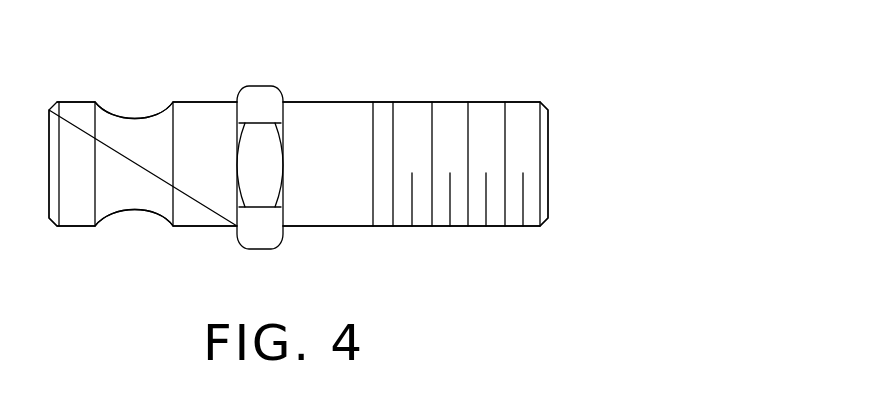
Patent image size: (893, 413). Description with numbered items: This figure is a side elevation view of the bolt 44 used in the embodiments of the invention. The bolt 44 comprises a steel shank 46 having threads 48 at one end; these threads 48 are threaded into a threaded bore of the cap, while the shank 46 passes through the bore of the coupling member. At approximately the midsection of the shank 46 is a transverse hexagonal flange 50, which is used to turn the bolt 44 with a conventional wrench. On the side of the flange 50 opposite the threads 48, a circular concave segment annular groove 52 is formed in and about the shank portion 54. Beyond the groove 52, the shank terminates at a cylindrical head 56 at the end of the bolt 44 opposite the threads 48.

The bolt 44 is at (331, 59).
The steel shank 46 is at (325, 228).
The threads 48 is at (458, 228).
The transverse hexagonal flange 50 is at (253, 84).
The circular concave segment annular groove 52 is at (140, 212).
The shank portion 54 is at (203, 228).
The cylindrical head 56 is at (75, 228).